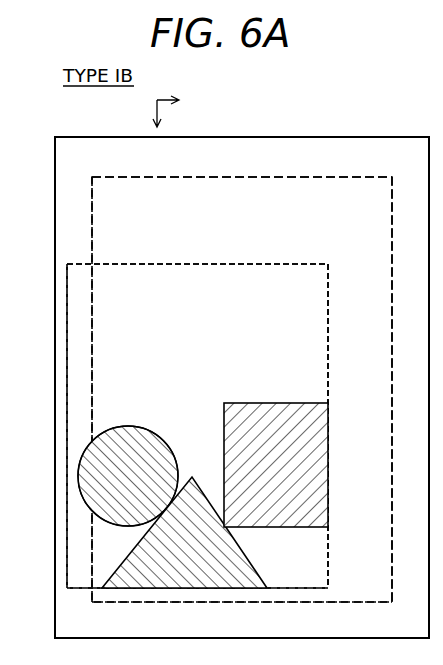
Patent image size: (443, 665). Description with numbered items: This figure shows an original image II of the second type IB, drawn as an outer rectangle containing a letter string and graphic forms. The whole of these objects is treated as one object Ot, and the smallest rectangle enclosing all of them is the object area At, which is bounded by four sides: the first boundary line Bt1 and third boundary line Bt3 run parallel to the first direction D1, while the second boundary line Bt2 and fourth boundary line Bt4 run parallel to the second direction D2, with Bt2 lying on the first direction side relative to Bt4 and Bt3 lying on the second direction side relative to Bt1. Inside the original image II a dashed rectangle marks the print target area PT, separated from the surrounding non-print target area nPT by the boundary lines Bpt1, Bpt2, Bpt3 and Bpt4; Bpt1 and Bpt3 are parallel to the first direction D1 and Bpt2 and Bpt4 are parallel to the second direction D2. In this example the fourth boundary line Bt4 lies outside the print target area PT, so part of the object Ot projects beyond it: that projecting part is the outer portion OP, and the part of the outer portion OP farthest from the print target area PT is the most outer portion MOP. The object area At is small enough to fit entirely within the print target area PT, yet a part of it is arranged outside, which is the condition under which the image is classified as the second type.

The original image II is at (381, 137).
The non-print target area nPT is at (256, 150).
The print target area PT is at (355, 190).
The first boundary line Bpt1 is at (254, 186).
The second boundary line Bpt2 is at (392, 412).
The third boundary line Bpt3 is at (252, 604).
The fourth boundary line Bpt4 is at (92, 250).
The object area At is at (322, 278).
The first boundary line Bt1 is at (208, 265).
The second boundary line Bt2 is at (328, 378).
The third boundary line Bt3 is at (294, 589).
The fourth boundary line Bt4 is at (70, 564).
The most outer portion MOP is at (64, 305).
The outer portion OP is at (77, 263).
The object Ot is at (182, 243).
The first direction D1 is at (183, 104).
The second direction D2 is at (132, 113).